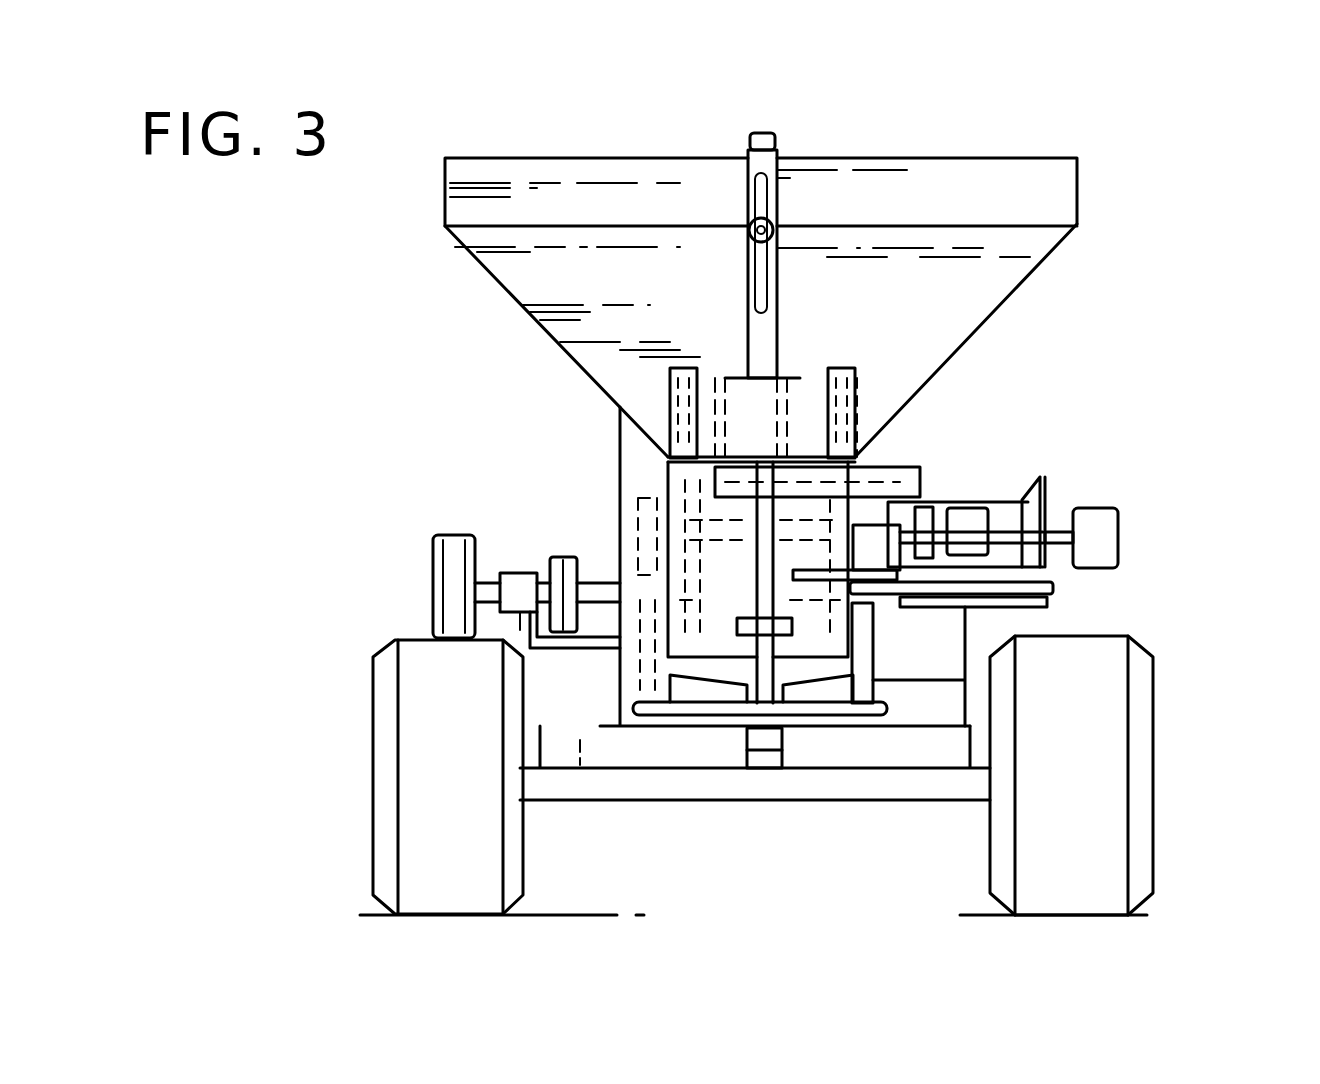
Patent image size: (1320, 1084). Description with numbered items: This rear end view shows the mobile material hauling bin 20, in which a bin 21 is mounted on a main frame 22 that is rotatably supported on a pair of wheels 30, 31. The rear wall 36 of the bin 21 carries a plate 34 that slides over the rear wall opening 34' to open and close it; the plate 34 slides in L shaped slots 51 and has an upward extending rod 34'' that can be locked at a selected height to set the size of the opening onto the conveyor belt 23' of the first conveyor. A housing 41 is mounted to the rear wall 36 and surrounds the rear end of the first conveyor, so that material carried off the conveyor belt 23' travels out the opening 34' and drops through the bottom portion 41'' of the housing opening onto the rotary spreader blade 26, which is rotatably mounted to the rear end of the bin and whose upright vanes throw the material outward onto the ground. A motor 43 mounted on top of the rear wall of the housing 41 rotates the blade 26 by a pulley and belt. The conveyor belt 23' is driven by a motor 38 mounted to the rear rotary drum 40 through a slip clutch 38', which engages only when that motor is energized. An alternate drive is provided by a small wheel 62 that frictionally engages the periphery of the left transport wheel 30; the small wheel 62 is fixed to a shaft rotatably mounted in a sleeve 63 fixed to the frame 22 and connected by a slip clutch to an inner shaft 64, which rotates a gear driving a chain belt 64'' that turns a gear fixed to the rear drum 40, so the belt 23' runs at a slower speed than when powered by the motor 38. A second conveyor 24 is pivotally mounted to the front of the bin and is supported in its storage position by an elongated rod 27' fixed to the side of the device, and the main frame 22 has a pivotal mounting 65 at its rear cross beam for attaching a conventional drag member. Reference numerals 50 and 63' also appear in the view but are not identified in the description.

The mobile material hauling bin 20 is at (1092, 211).
The bin 21 is at (963, 303).
The main frame 22 is at (943, 752).
The conveyor belt 23' is at (701, 557).
The second conveyor 24 is at (1022, 500).
The rotary spreader blade 26 is at (747, 770).
The elongated rod 27' is at (989, 654).
The left transport wheel 30 is at (1133, 823).
The wheel 31 is at (408, 819).
The plate 34 is at (777, 418).
The rear wall opening 34' is at (711, 379).
The rod 34'' is at (740, 359).
The rear wall 36 is at (517, 292).
The motor 38 is at (948, 488).
The slip clutch 38' is at (833, 464).
The rear rotary drum 40 is at (745, 602).
The housing 41 is at (741, 415).
The bottom portion of the housing opening 41'' is at (760, 721).
The motor 43 is at (900, 590).
The gearbox 50 is at (1118, 533).
The L shaped slots 51 is at (856, 376).
The small wheel 62 is at (460, 535).
The sleeve 63 is at (535, 640).
The shaft bearing 63' is at (553, 558).
The inner shaft 64 is at (579, 574).
The chain belt 64'' is at (575, 649).
The pivotal mounting 65 is at (780, 772).